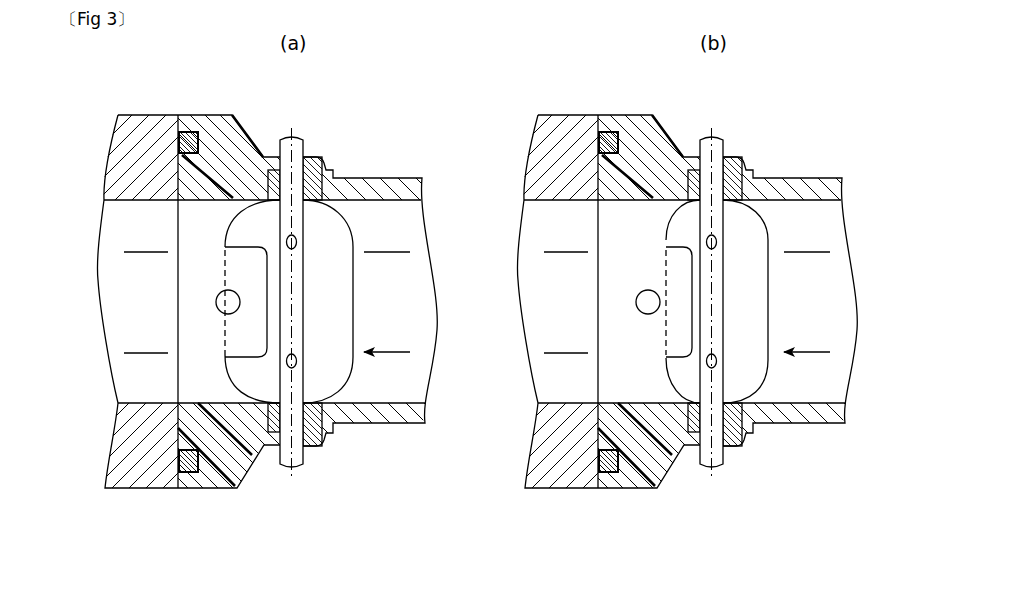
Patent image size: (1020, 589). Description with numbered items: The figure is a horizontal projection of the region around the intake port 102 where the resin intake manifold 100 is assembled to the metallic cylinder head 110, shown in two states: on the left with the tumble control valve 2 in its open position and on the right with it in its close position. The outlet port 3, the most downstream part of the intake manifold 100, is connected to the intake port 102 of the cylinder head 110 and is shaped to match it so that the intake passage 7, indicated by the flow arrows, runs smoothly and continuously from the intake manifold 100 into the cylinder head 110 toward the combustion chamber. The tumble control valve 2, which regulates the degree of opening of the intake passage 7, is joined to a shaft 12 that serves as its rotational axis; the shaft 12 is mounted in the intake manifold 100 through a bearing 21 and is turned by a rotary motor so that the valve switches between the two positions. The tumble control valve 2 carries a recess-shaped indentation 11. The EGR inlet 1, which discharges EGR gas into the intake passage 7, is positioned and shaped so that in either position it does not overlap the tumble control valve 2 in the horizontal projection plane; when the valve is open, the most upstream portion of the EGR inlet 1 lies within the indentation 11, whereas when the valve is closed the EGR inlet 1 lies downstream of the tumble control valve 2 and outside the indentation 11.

The EGR inlet 1 is at (219, 308).
The tumble control valve 2 is at (348, 307).
The outlet port 3 is at (176, 228).
The intake passage 7 is at (158, 397).
The indentation 11 is at (270, 268).
The shaft 12 is at (278, 143).
The bearing 21 is at (327, 163).
The intake manifold 100 is at (386, 178).
The intake port 102 is at (182, 340).
The cylinder head 110 is at (155, 485).